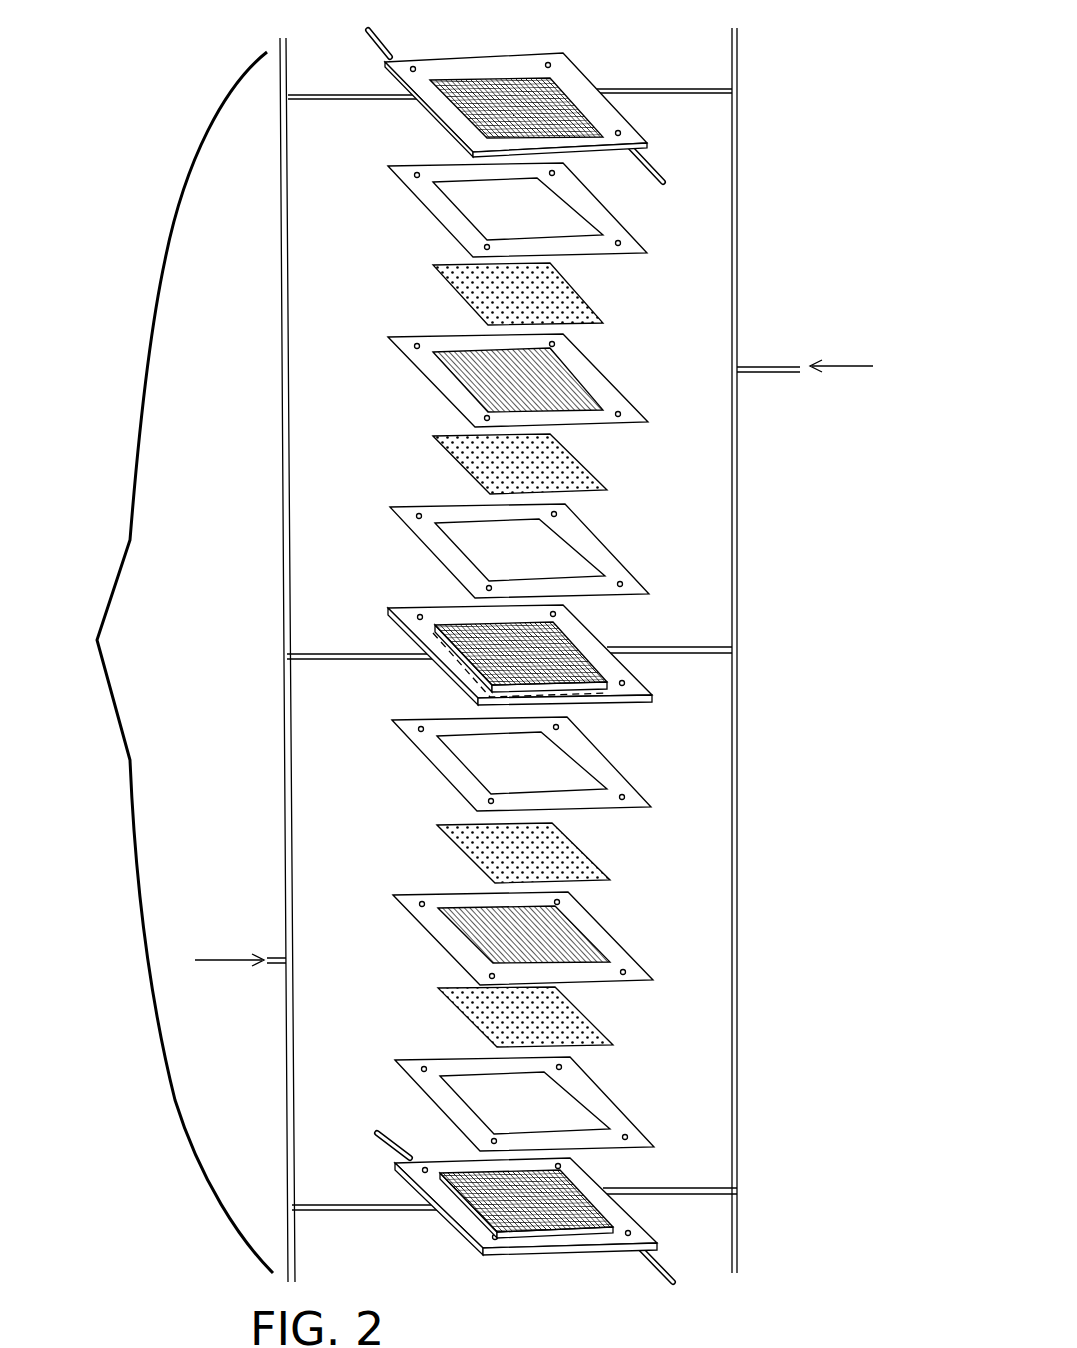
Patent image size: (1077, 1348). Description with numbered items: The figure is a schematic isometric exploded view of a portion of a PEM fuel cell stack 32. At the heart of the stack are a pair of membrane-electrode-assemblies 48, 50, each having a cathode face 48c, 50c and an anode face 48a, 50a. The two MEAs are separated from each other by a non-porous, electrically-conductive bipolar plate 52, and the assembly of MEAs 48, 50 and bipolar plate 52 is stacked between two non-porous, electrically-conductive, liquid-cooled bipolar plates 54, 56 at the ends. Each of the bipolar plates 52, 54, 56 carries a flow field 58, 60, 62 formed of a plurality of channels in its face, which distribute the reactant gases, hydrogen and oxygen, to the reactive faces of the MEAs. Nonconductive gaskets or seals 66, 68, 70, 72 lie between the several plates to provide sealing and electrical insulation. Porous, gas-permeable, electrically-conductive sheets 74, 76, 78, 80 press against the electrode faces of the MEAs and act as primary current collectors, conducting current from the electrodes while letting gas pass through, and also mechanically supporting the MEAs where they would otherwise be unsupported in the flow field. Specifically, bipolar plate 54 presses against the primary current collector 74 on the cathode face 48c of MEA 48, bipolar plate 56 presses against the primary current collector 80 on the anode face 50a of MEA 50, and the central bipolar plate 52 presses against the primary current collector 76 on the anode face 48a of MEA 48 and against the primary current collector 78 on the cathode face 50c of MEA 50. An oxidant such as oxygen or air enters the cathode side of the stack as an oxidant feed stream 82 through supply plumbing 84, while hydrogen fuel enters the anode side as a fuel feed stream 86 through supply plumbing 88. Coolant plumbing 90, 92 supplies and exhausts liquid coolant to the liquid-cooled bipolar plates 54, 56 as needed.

The PEM fuel cell stack 32 is at (165, 662).
The membrane-electrode-assembly 48 is at (499, 402).
The anode face 48a is at (607, 425).
The cathode face 48c is at (585, 388).
The membrane-electrode-assembly 50 is at (539, 918).
The anode face 50a is at (437, 938).
The cathode face 50c is at (465, 907).
The bipolar plate 52 is at (497, 648).
The bipolar plate 54 is at (475, 105).
The bipolar plate 56 is at (552, 1208).
The flow field 58 is at (452, 106).
The flow field 60 is at (560, 637).
The flow field 62 is at (477, 1213).
The gasket 66 is at (435, 200).
The gasket 68 is at (432, 542).
The gasket 70 is at (628, 783).
The gasket 72 is at (610, 1097).
The primary current collector 74 is at (465, 283).
The primary current collector 76 is at (470, 456).
The primary current collector 78 is at (572, 843).
The primary current collector 80 is at (578, 1018).
The oxidant feed stream 82 is at (870, 366).
The supply plumbing 84 is at (738, 494).
The fuel feed stream 86 is at (208, 958).
The supply plumbing 88 is at (289, 1046).
The coolant plumbing 90 is at (385, 38).
The coolant plumbing 92 is at (651, 163).